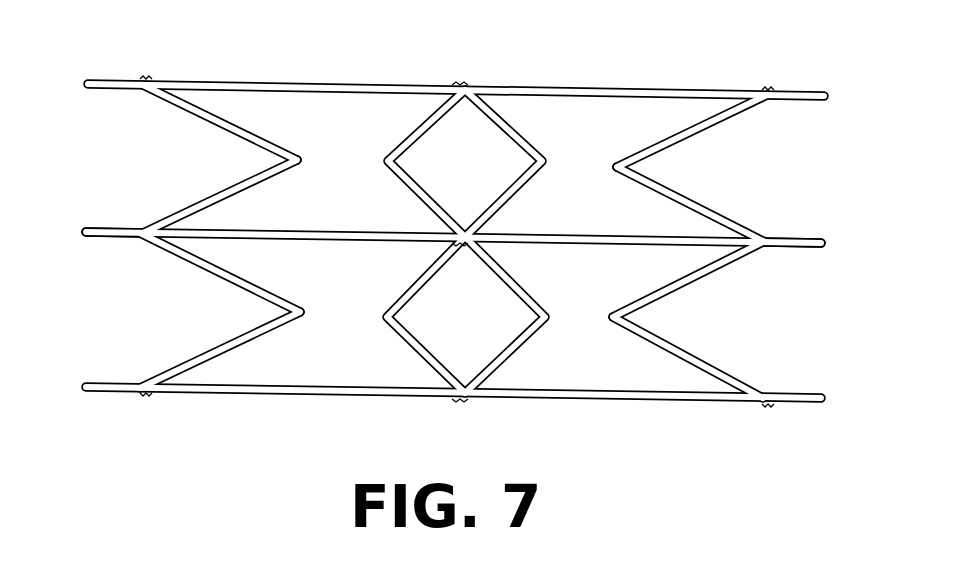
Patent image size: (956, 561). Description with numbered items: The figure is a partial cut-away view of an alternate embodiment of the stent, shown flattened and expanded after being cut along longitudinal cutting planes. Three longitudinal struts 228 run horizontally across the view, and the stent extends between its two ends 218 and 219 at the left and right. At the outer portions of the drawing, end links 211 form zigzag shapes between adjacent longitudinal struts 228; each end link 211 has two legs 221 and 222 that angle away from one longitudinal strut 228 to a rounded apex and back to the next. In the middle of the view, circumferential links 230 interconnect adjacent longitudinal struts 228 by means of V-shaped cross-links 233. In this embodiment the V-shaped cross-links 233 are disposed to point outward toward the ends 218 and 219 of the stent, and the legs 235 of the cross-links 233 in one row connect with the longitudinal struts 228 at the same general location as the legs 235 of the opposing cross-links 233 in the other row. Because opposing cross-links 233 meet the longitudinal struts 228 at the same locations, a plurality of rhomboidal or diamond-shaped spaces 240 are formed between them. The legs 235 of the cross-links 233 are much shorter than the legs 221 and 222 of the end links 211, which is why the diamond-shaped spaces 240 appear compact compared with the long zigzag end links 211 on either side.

The end link 211 is at (459, 241).
The end of the stent 218 is at (87, 251).
The end of the stent 219 is at (840, 239).
The leg of end link 221 is at (262, 183).
The leg of end link 222 is at (203, 118).
The longitudinal strut 228 is at (291, 80).
The circumferential link 230 is at (472, 220).
The V-shaped cross-link 233 is at (471, 241).
The leg of cross-link 235 is at (430, 126).
The rhomboidal or diamond-shaped space 240 is at (497, 328).